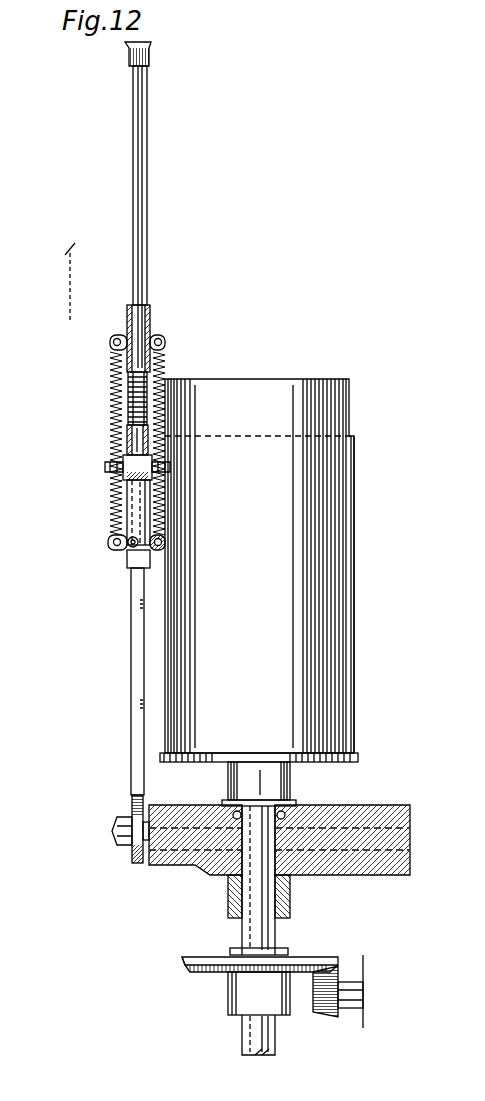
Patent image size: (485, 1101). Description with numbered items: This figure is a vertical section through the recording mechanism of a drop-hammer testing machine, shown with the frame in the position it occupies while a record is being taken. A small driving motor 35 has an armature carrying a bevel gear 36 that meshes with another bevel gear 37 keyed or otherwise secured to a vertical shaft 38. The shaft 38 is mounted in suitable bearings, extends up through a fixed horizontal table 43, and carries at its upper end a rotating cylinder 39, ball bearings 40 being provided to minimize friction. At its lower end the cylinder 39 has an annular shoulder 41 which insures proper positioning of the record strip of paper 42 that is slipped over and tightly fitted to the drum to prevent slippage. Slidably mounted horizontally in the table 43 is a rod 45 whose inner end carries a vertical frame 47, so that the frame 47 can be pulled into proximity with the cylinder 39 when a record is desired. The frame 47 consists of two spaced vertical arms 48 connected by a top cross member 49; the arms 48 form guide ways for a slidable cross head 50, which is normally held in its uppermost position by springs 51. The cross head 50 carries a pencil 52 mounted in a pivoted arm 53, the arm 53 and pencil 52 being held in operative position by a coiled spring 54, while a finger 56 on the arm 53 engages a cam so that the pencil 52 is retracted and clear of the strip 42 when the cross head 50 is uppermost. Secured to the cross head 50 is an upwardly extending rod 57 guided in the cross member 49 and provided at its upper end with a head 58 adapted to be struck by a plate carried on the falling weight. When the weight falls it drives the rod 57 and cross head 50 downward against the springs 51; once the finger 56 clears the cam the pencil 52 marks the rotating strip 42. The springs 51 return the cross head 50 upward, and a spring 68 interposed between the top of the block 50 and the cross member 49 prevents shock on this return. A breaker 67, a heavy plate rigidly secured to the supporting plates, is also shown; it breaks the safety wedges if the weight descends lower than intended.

The driving motor 35 is at (368, 1030).
The bevel gear 36 is at (336, 1018).
The bevel gear 37 is at (313, 956).
The vertical shaft 38 is at (240, 928).
The rotating cylinder 39 is at (278, 379).
The ball bearings 40 is at (300, 806).
The annular shoulder 41 is at (359, 760).
The record strip of paper 42 is at (356, 722).
The horizontal table 43 is at (410, 805).
The rod 45 is at (115, 838).
The vertical frame 47 is at (140, 864).
The vertical arms 48 is at (132, 700).
The top cross member 49 is at (152, 340).
The cross head 50 is at (136, 562).
The springs 51 is at (108, 502).
The pencil 52 is at (168, 467).
The pivoted arm 53 is at (128, 520).
The coiled spring 54 is at (135, 546).
The finger 56 is at (165, 458).
The rod 57 is at (149, 267).
The head 58 is at (151, 46).
The breaker 67 is at (79, 271).
The spring 68 is at (160, 374).